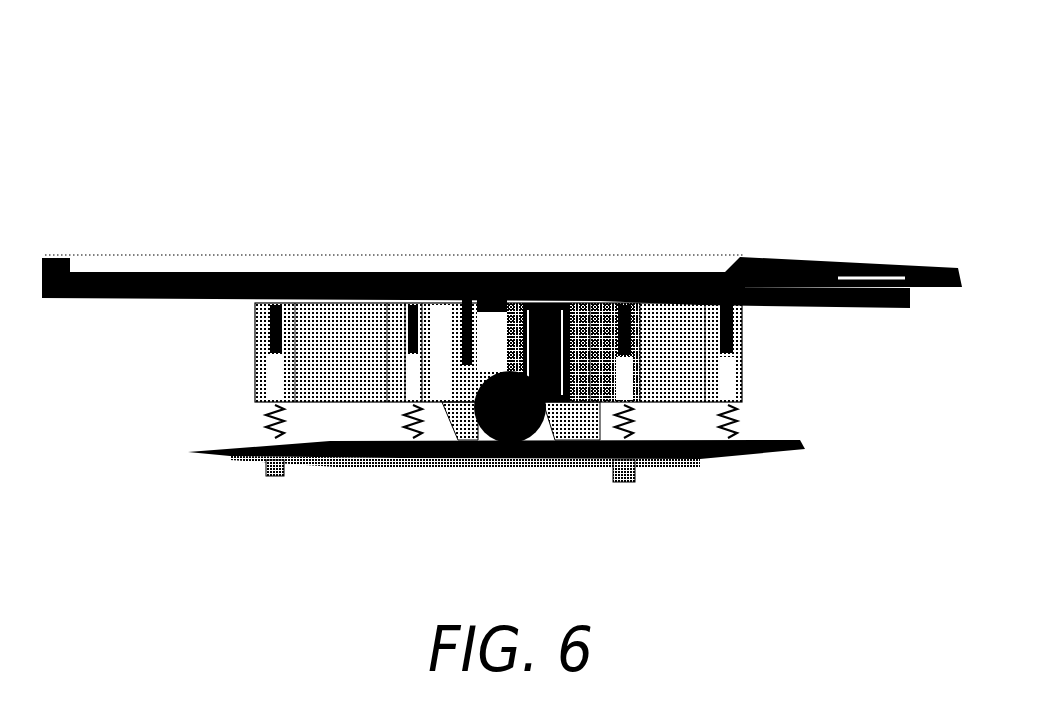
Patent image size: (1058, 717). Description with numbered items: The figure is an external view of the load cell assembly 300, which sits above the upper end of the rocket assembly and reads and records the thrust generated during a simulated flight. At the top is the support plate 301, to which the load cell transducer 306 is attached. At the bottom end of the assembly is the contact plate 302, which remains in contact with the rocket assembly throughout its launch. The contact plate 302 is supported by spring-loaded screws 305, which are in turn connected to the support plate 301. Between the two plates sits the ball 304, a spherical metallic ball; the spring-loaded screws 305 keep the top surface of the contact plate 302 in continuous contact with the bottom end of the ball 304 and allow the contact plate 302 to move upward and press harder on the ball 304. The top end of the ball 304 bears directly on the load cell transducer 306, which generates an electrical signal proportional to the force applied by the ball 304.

The load cell assembly 300 is at (502, 309).
The support plate 301 is at (745, 252).
The contact plate 302 is at (455, 468).
The ball 304 is at (550, 290).
The spring-loaded screws 305 is at (273, 476).
The load cell transducer 306 is at (445, 275).